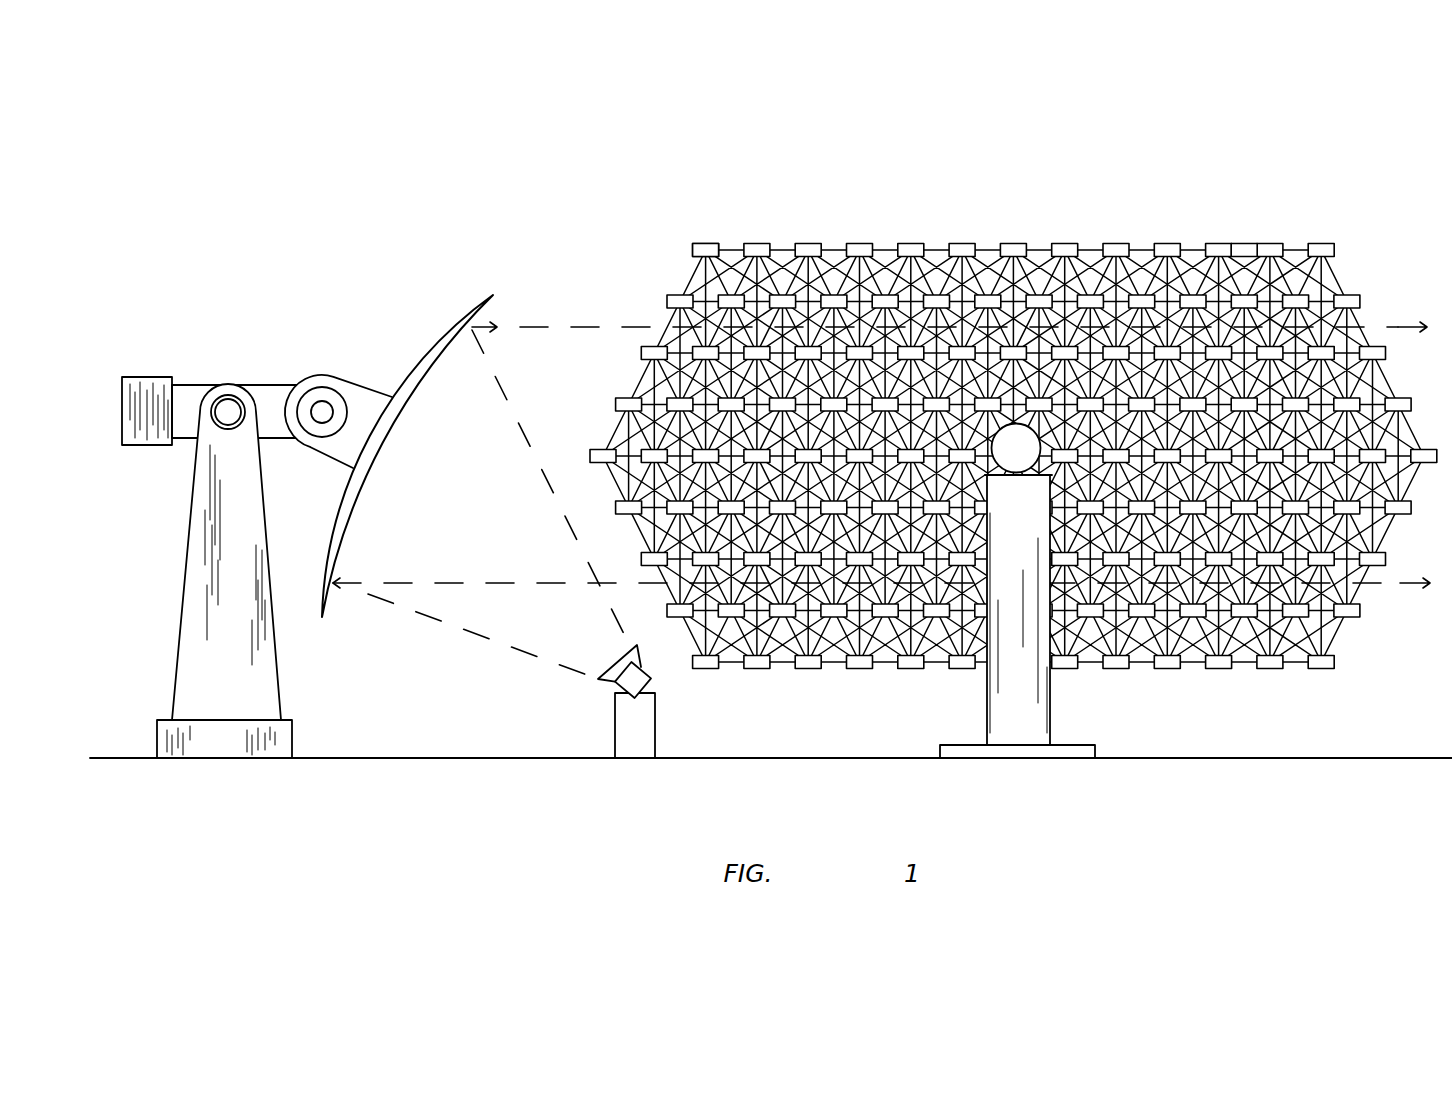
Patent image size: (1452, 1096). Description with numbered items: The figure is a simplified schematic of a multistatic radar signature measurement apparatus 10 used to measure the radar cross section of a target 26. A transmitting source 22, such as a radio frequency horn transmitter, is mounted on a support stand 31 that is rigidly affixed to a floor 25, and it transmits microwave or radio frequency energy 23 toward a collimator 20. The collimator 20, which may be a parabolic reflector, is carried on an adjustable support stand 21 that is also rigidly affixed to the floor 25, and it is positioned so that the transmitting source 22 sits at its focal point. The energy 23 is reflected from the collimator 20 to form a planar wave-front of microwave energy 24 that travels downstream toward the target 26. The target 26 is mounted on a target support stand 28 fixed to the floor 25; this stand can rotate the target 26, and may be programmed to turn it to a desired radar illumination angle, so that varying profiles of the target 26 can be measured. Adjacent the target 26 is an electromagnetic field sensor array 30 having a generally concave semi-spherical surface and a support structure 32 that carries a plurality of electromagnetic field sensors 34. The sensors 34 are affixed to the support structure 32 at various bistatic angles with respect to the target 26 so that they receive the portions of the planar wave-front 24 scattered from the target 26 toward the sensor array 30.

The multistatic radar signature measurement apparatus 10 is at (482, 195).
The collimator 20 is at (428, 352).
The adjustable support stand 21 is at (199, 541).
The transmitting source 22 is at (640, 675).
The microwave or radio frequency energy 23 is at (516, 431).
The planar wave-front of microwave energy 24 is at (540, 326).
The floor 25 is at (1360, 757).
The target 26 is at (1014, 460).
The target support stand 28 is at (1050, 722).
The electromagnetic field sensor array 30 is at (1013, 386).
The support stand 31 is at (623, 738).
The support structure 32 is at (705, 275).
The electromagnetic field sensors 34 is at (1262, 244).